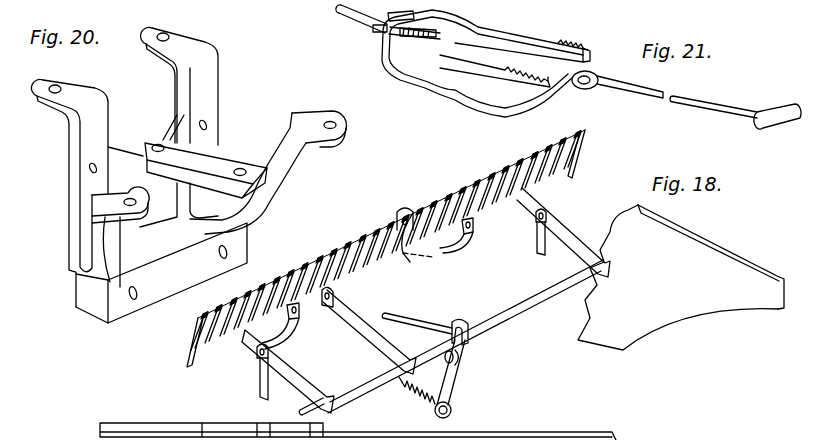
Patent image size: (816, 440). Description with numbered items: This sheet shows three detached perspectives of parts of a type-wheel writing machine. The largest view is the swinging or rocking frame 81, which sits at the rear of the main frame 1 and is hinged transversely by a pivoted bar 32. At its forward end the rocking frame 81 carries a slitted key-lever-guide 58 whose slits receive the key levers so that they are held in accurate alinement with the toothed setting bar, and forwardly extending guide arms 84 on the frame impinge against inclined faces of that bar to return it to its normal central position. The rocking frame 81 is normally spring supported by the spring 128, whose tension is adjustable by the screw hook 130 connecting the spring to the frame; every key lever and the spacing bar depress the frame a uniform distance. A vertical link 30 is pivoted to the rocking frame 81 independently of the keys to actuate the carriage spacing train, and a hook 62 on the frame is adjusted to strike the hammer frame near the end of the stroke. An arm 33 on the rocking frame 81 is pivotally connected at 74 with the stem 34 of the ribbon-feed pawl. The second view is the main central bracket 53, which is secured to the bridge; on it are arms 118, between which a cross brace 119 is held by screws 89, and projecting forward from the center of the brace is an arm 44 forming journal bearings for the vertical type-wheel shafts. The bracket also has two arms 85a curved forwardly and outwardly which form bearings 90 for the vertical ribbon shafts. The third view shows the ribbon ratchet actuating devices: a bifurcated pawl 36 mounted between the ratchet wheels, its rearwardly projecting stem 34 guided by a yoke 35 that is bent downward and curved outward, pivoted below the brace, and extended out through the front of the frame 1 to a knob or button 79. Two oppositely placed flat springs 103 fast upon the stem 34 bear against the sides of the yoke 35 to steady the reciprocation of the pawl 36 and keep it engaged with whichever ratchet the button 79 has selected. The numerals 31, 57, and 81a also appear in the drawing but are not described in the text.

In FIG. 18, the frame 1 is at (681, 277).
In FIG. 18, the vertical link 30 is at (260, 380).
In FIG. 18, the clip 31 is at (258, 355).
In FIG. 18, the pivoted bar 32 is at (545, 290).
In FIG. 18, the arm 33 is at (468, 334).
In FIG. 21, the stem 34 is at (341, 15).
In FIG. 18, the stem 34 is at (404, 322).
In FIG. 21, the yoke 35 is at (378, 38).
In FIG. 21, the bifurcated pawl 36 is at (553, 38).
In FIG. 20, the arm 44 is at (221, 157).
In FIG. 20, the bracket 53 is at (161, 273).
In FIG. 18, the clip 57 is at (327, 310).
In FIG. 18, the key-lever-guide 58 is at (191, 340).
In FIG. 18, the hook 62 is at (407, 210).
In FIG. 18, the pivot connection 74 is at (454, 357).
In FIG. 21, the knob or button 79 is at (772, 128).
In FIG. 18, the rocking frame 81 is at (388, 240).
In FIG. 18, the lever 81a is at (447, 382).
In FIG. 18, the guide arms 84 is at (288, 340).
In FIG. 20, the curved arms 85a is at (277, 163).
In FIG. 20, the screws 89 is at (90, 168).
In FIG. 20, the bearings 90 is at (136, 218).
In FIG. 21, the flat springs 103 is at (412, 9).
In FIG. 20, the arms 118 is at (72, 213).
In FIG. 20, the cross brace 119 is at (170, 125).
In FIG. 18, the spring 128 is at (399, 390).
In FIG. 18, the screw hook 130 is at (452, 408).